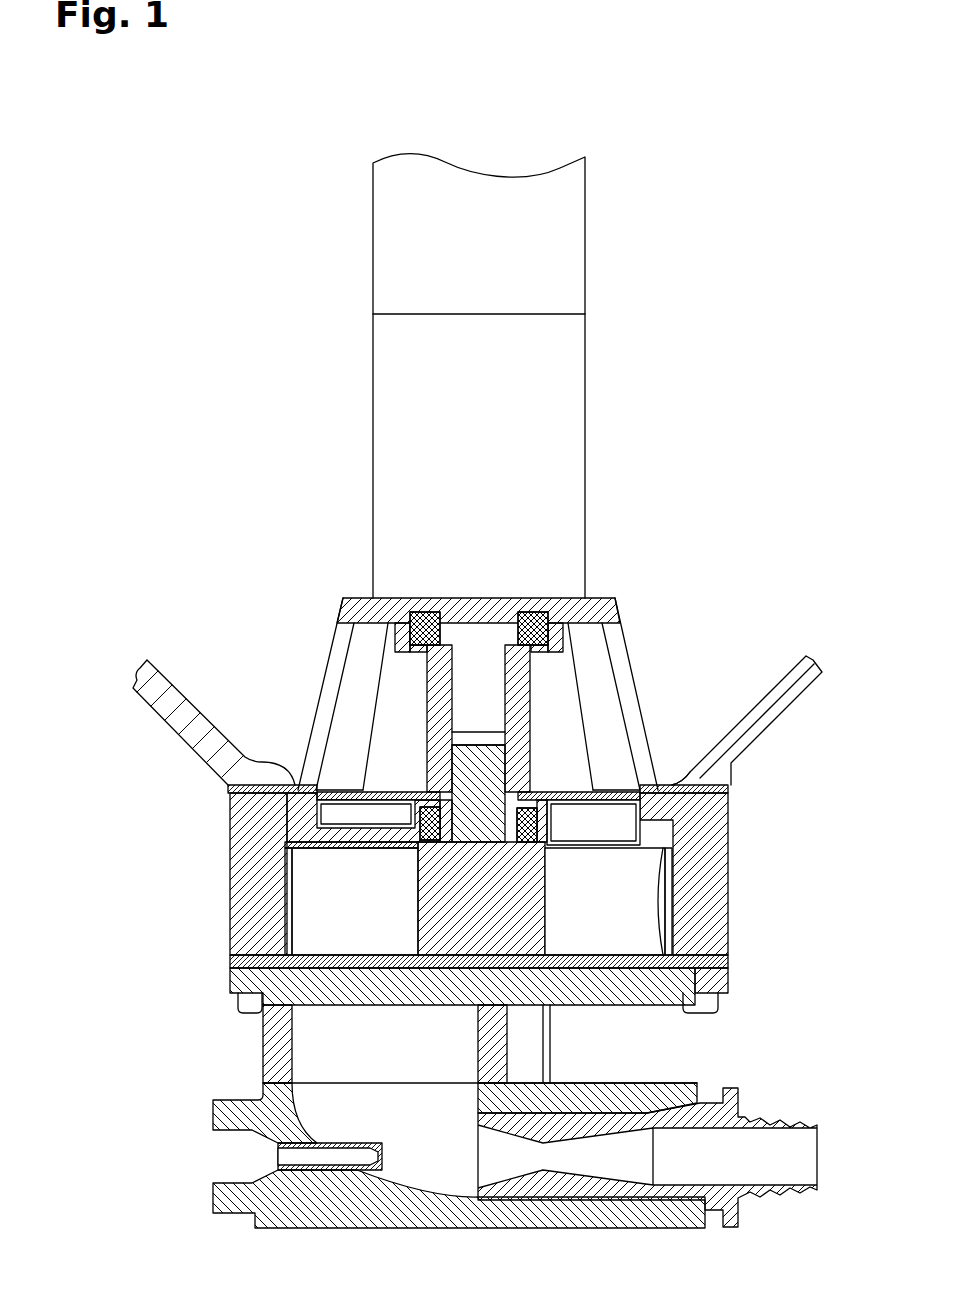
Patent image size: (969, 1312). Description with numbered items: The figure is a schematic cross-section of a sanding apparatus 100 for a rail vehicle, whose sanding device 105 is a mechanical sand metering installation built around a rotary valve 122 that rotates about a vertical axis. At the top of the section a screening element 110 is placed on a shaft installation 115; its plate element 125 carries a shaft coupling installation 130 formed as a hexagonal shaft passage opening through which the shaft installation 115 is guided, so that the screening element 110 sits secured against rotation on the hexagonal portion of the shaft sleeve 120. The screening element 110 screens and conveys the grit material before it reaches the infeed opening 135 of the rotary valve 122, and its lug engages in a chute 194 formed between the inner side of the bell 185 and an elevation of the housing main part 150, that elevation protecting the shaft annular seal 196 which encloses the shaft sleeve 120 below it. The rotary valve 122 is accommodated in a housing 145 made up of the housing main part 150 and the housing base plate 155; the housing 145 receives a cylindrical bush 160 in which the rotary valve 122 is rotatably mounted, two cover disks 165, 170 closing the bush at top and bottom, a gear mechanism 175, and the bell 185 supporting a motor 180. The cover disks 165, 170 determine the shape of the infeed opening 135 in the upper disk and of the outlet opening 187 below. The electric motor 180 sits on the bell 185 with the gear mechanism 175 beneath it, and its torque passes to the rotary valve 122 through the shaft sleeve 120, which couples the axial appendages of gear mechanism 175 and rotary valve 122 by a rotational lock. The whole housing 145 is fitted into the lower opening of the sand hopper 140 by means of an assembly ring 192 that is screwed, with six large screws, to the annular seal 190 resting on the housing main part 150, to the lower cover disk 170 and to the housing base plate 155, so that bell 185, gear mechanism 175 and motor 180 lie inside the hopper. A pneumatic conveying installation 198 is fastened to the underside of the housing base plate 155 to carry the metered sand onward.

The sanding apparatus 100 is at (247, 417).
The sanding device 105 is at (404, 753).
The screening element 110 is at (605, 780).
The shaft installation 115 is at (417, 706).
The shaft sleeve 120 is at (520, 690).
The rotary valve 122 is at (520, 910).
The plate element 125 is at (633, 778).
The shaft coupling installation 130 is at (417, 781).
The infeed opening 135 is at (593, 848).
The sand hopper 140 is at (817, 654).
The housing 145 is at (226, 844).
The housing main part 150 is at (257, 922).
The housing base plate 155 is at (633, 1010).
The cylindrical bush 160 is at (672, 930).
The upper cover disk 165 is at (353, 852).
The lower cover disk 170 is at (643, 962).
The gear mechanism 175 is at (530, 400).
The motor 180 is at (545, 255).
The bell 185 is at (528, 600).
The outlet opening 187 is at (345, 962).
The annular seal 190 is at (728, 787).
The assembly ring 192 is at (690, 772).
The chute 194 is at (359, 811).
The shaft annular seal 196 is at (550, 608).
The pneumatic conveying installation 198 is at (203, 1158).